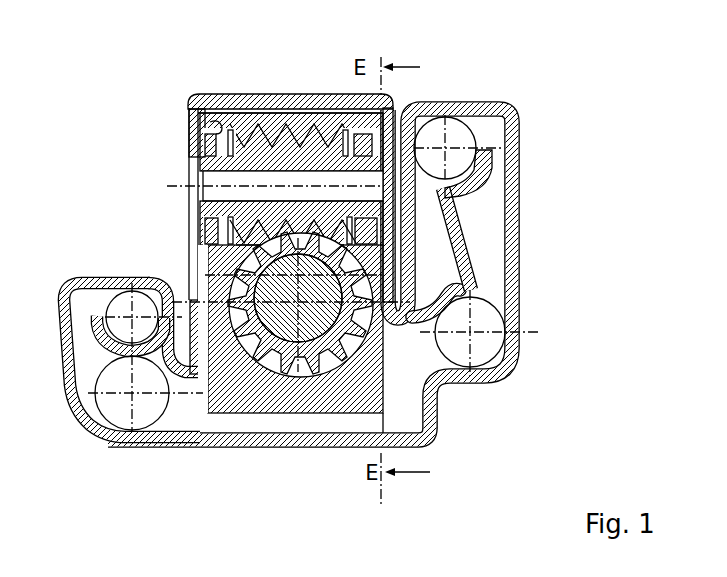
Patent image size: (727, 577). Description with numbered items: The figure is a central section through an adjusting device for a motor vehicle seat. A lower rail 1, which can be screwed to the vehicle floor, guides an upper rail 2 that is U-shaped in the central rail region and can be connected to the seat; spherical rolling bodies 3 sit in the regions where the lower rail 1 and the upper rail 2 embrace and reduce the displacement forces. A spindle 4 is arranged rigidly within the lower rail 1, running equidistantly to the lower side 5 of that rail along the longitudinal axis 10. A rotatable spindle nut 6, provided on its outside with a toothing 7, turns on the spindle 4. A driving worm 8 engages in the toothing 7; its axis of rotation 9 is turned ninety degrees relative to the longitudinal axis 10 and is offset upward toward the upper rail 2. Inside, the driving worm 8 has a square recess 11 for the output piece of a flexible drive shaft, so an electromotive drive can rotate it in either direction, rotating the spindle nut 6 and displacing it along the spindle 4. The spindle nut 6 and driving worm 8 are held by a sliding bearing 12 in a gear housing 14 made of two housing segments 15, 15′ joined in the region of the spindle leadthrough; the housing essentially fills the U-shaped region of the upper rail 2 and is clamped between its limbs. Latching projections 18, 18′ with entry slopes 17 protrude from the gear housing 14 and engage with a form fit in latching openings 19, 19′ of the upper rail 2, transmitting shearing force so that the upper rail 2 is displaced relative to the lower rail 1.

The lower rail 1 is at (183, 441).
The upper rail 2 is at (232, 95).
The spherical rolling bodies 3 is at (115, 410).
The spindle 4 is at (303, 315).
The lower side 5 is at (278, 443).
The spindle nut 6 is at (333, 352).
The toothing 7 is at (188, 282).
The driving worm 8 is at (316, 140).
The axis of rotation 9 is at (177, 187).
The longitudinal axis 10 is at (288, 305).
The square recess 11 is at (388, 195).
The sliding bearing 12 is at (220, 131).
The gear housing 14 is at (372, 352).
The housing segment 15 is at (355, 380).
The housing segment 15′ is at (203, 400).
The entry slopes 17 is at (198, 238).
The latching projection 18 is at (196, 253).
The latching projection 18′ is at (383, 250).
The latching opening 19 is at (192, 164).
The latching opening 19′ is at (387, 212).